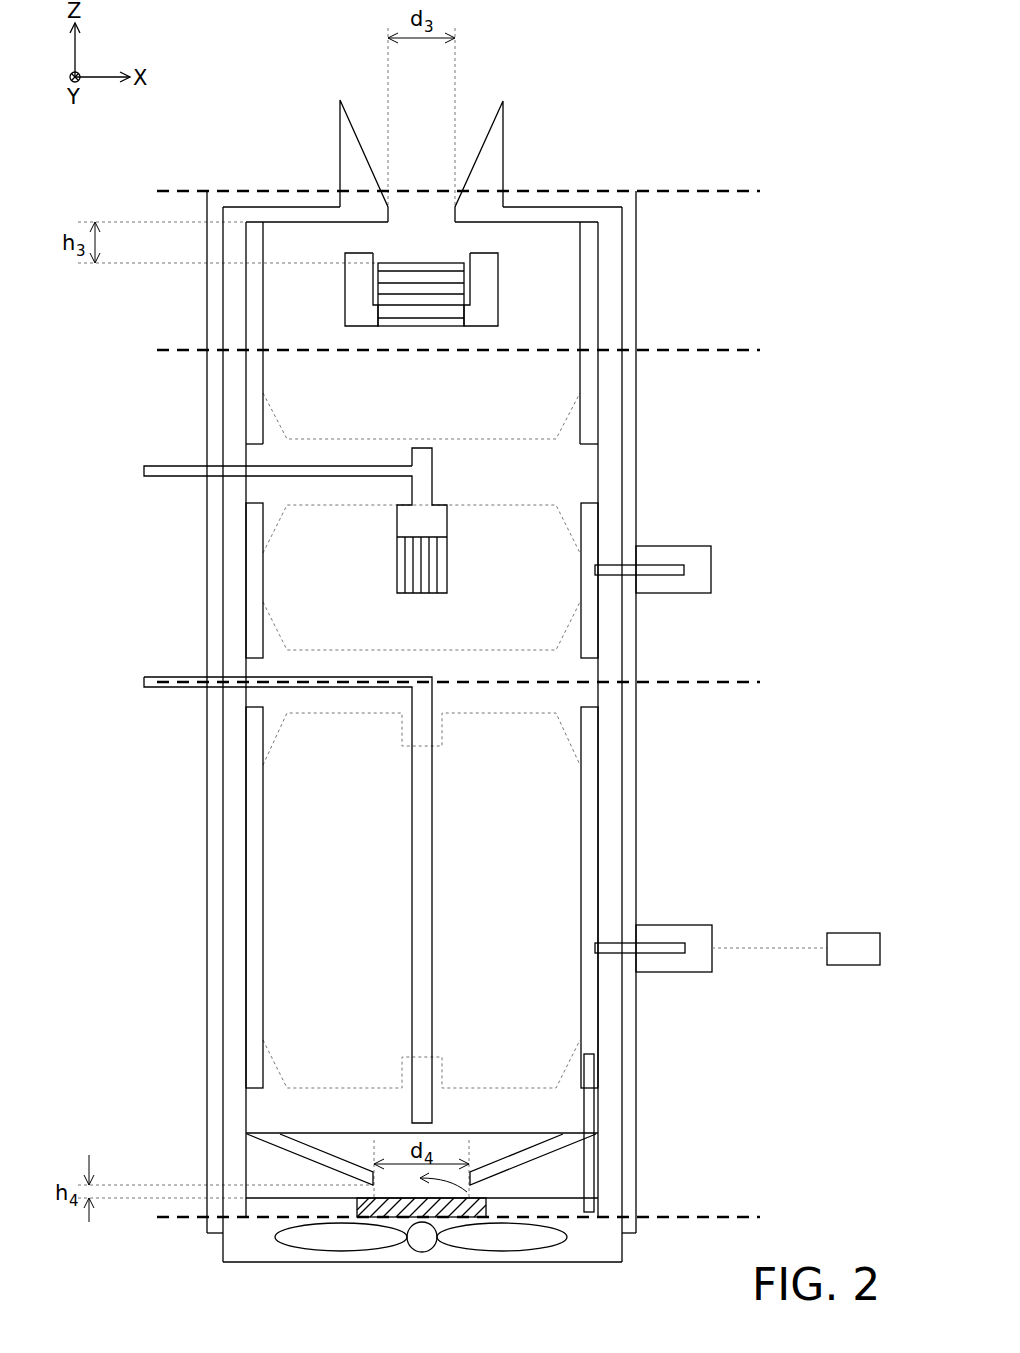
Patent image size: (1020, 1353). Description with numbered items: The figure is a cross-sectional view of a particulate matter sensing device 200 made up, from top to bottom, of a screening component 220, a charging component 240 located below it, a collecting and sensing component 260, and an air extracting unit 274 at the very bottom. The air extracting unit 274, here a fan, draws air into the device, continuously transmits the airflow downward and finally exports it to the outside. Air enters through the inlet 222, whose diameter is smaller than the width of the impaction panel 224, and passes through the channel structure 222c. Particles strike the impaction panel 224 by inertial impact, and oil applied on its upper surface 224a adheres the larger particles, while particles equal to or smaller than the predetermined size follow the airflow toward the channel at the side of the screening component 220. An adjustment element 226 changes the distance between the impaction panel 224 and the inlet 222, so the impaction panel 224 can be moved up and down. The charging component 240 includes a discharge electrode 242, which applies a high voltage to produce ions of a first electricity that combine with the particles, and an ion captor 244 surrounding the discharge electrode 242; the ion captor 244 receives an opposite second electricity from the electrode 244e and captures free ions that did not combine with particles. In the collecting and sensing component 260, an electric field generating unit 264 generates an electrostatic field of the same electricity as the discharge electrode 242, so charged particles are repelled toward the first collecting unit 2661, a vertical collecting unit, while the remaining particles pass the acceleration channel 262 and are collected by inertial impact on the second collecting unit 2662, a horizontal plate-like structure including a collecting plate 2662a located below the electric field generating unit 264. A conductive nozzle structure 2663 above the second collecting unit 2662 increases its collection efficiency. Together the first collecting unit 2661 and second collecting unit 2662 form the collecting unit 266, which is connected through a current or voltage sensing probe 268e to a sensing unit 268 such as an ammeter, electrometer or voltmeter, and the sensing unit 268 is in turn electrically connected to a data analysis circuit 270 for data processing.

The particulate matter sensing device 200 is at (892, 14).
The screening component 220 is at (738, 191).
The inlet 222 is at (428, 110).
The channel structure 222c is at (398, 165).
The impaction panel 224 is at (457, 265).
The upper surface 224a is at (403, 262).
The adjustment element 226 is at (478, 298).
The charging component 240 is at (738, 350).
The discharge electrode 242 is at (410, 568).
The ion captor 244 is at (255, 636).
The electrode 244e is at (673, 565).
The collecting and sensing component 260 is at (738, 682).
The acceleration channel 262 is at (502, 1192).
The electric field generating unit 264 is at (423, 838).
The collecting unit 266 is at (118, 932).
The first collecting unit 2661 is at (253, 945).
The second collecting unit 2662 is at (330, 1208).
The collecting plate 2662a is at (385, 1218).
The nozzle structure 2663 is at (523, 1148).
The sensing unit 268 is at (668, 962).
The current or voltage sensing probe 268e is at (627, 950).
The data analysis circuit 270 is at (850, 932).
The air extracting unit 274 is at (527, 1240).